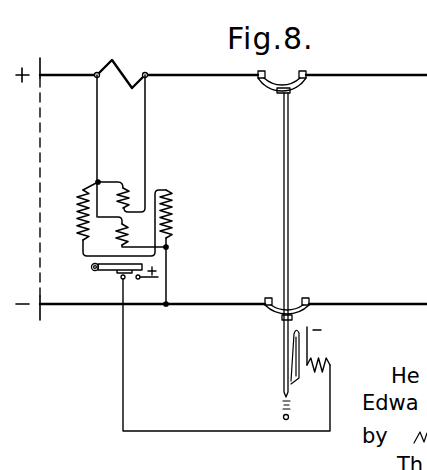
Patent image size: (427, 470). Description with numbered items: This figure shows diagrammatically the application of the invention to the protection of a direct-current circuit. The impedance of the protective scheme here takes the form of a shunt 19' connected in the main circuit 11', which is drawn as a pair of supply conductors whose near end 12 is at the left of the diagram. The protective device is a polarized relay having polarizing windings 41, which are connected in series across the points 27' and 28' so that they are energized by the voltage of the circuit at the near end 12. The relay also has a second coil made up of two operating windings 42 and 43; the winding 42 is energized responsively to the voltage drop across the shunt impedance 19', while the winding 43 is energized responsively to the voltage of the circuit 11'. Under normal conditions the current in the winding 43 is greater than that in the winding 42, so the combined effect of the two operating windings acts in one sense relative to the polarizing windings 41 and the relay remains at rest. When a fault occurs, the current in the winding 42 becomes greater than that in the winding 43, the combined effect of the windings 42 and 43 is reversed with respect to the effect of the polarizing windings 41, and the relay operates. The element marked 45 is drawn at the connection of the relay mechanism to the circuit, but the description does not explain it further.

The main circuit 11' is at (233, 189).
The near end 12 is at (35, 201).
The shunt 19' is at (127, 69).
The point 27' is at (81, 175).
The point 28' is at (185, 274).
The polarizing windings 41 is at (77, 210).
The operating winding 42 is at (126, 192).
The operating winding 43 is at (118, 231).
The brush holder 45 is at (300, 84).